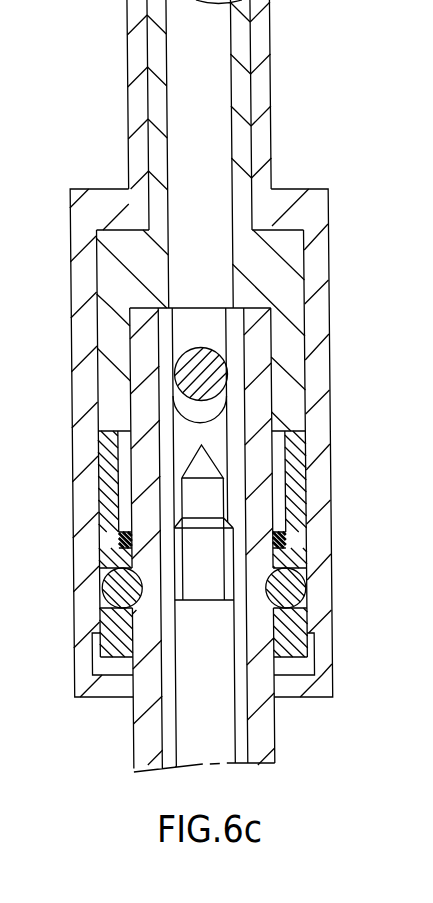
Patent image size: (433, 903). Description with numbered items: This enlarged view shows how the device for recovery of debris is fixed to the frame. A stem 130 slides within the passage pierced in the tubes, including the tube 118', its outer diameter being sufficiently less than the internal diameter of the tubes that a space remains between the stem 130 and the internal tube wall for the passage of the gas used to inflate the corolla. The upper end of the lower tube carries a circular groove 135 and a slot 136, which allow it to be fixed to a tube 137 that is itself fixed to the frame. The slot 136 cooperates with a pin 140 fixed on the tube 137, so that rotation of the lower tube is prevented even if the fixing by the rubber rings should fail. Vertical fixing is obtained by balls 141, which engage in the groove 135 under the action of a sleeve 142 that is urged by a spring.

The tube 137 is at (247, 153).
The pin 140 is at (193, 357).
The slot 136 is at (203, 410).
The sleeve 142 is at (320, 497).
The balls 141 is at (112, 588).
The circular groove 135 is at (134, 608).
The tube 118' is at (233, 641).
The stem 130 is at (224, 741).